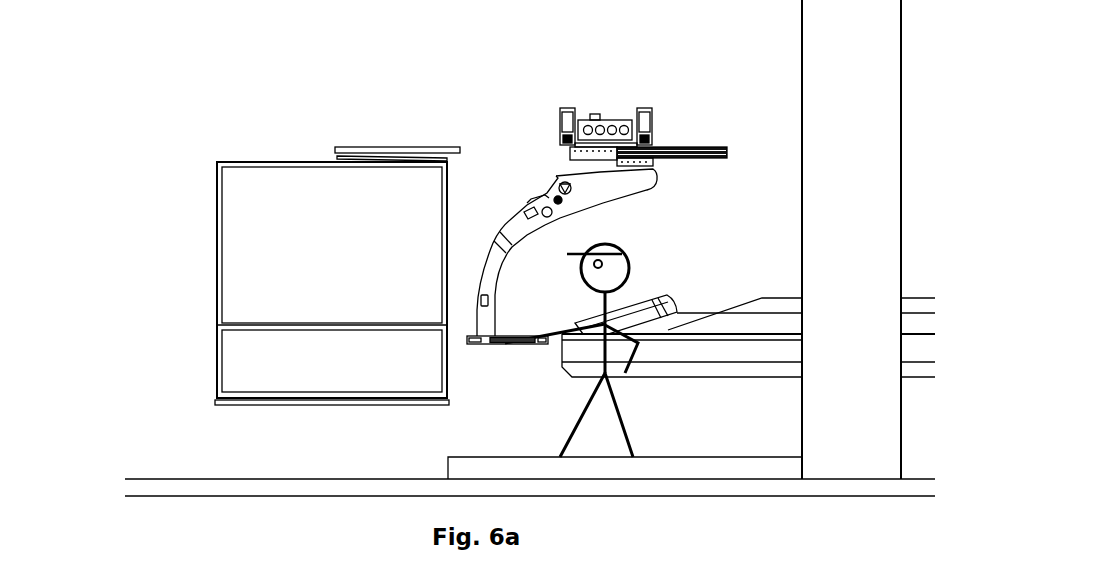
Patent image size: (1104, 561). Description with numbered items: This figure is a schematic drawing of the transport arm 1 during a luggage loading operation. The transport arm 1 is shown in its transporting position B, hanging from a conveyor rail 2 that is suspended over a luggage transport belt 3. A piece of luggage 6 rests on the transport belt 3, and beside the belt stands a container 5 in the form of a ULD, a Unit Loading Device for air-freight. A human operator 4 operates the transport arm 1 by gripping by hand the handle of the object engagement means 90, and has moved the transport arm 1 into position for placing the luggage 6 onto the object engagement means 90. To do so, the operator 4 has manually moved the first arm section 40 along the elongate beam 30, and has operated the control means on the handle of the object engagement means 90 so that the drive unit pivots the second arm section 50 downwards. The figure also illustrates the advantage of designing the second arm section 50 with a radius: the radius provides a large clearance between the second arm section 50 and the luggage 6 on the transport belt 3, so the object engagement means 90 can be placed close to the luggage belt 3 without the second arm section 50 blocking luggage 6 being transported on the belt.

The transport arm 1 is at (487, 72).
The conveyor rail 2 is at (626, 100).
The transporting position B is at (648, 60).
The luggage transport belt 3 is at (698, 326).
The human operator 4 is at (638, 383).
The container 5 is at (236, 148).
The piece of luggage 6 is at (634, 290).
The elongate beam 30 is at (700, 129).
The first arm section 40 is at (561, 164).
The second arm section 50 is at (507, 205).
The object engagement means 90 is at (479, 328).